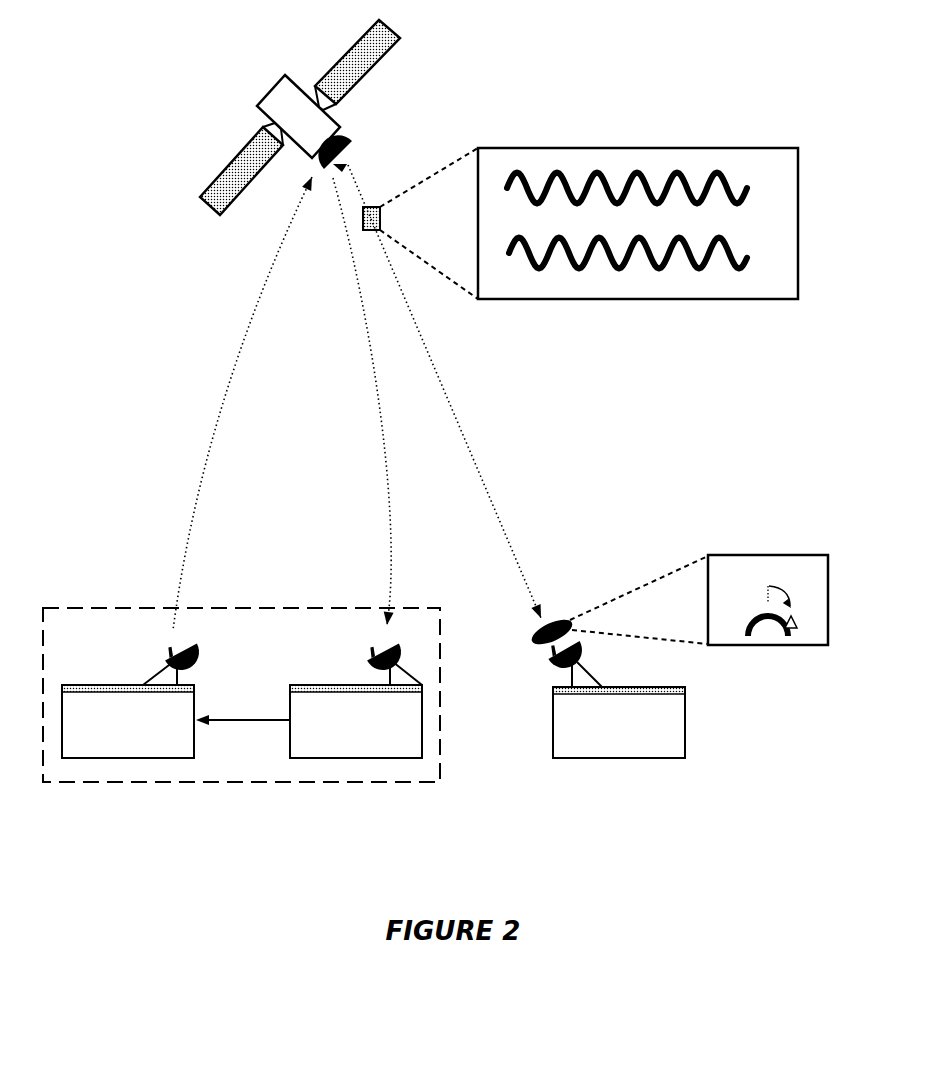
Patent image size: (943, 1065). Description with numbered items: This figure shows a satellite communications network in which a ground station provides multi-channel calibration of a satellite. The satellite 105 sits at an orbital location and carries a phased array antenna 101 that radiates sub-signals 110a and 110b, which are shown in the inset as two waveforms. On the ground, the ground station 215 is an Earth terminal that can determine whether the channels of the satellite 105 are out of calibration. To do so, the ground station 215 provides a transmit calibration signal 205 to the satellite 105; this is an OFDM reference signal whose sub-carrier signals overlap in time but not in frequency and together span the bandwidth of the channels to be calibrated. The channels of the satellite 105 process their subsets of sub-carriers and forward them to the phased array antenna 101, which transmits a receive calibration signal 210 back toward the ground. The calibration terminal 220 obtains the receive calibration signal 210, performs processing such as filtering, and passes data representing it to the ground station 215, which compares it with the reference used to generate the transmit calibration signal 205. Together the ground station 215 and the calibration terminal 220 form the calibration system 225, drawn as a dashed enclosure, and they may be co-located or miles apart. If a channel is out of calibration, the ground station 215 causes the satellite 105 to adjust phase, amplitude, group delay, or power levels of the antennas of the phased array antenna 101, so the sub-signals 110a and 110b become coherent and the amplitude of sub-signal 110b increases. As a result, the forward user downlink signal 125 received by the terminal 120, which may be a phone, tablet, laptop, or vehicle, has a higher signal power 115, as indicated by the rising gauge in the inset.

The phased array antenna 101 is at (347, 138).
The satellite 105 is at (277, 83).
The sub-signal 110a is at (756, 191).
The sub-signal 110b is at (758, 245).
The signal power 115 is at (767, 555).
The terminal 120 is at (606, 686).
The forward user downlink signal 125 is at (470, 391).
The transmit calibration signal 205 is at (188, 403).
The receive calibration signal 210 is at (327, 401).
The ground station 215 is at (133, 696).
The calibration terminal 220 is at (309, 696).
The calibration system 225 is at (290, 782).